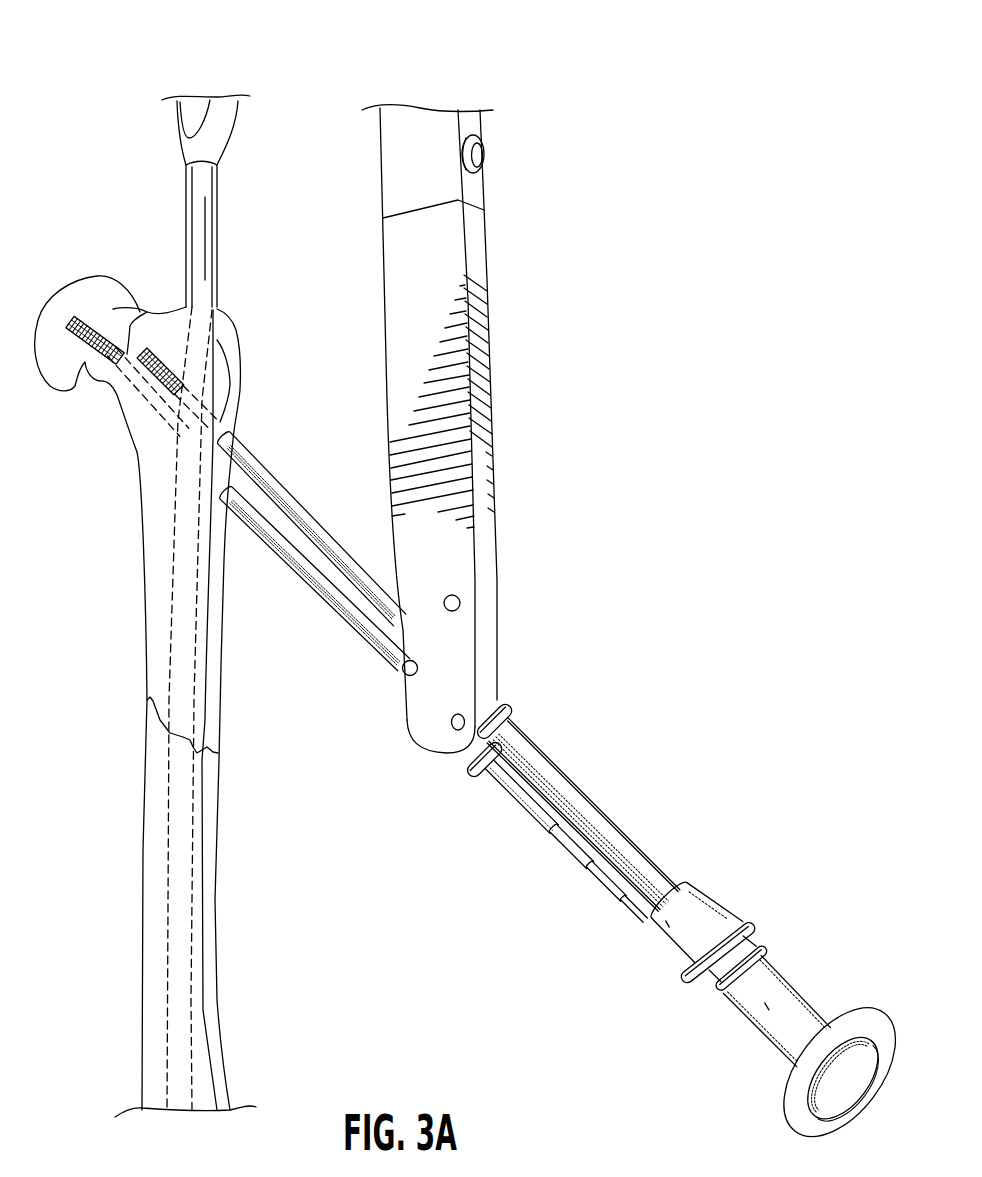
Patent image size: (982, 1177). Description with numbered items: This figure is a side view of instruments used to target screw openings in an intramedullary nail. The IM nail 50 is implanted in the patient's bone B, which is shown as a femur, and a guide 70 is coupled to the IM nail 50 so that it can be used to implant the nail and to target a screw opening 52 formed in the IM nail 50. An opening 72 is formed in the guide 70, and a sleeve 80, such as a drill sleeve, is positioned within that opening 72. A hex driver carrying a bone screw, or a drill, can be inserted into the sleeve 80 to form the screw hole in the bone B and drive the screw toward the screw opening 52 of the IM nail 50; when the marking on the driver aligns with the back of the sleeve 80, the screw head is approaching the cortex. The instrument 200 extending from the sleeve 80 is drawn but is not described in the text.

The IM nail 50 is at (183, 686).
The screw opening 52 is at (243, 425).
The guide 70 is at (466, 382).
The opening 72 is at (507, 657).
The sleeve 80 is at (500, 702).
The compression instrument 200 is at (557, 824).
The bone B is at (143, 987).